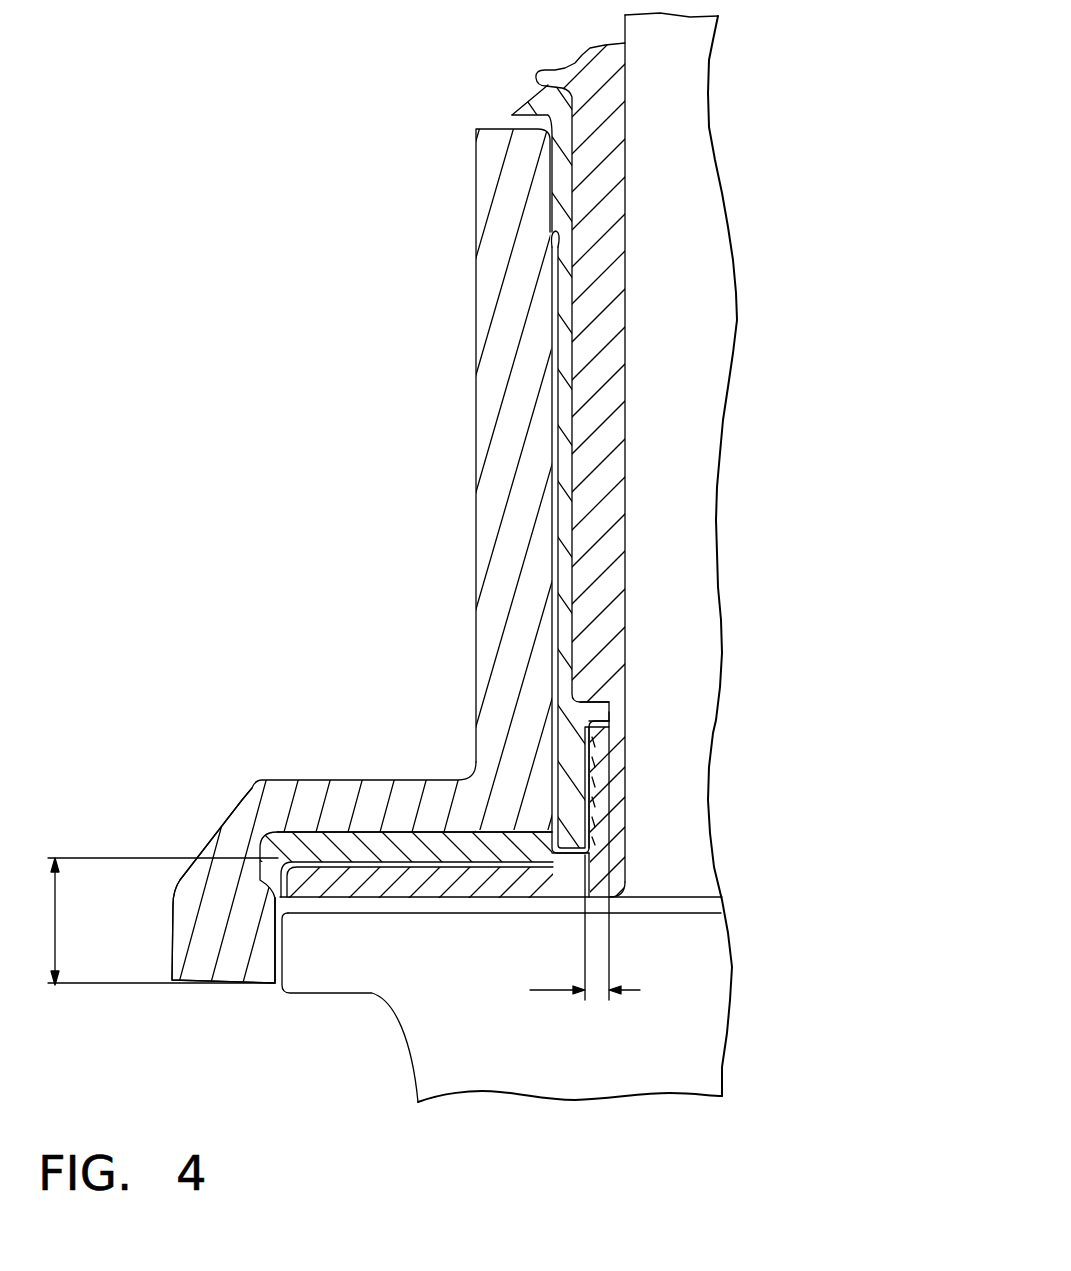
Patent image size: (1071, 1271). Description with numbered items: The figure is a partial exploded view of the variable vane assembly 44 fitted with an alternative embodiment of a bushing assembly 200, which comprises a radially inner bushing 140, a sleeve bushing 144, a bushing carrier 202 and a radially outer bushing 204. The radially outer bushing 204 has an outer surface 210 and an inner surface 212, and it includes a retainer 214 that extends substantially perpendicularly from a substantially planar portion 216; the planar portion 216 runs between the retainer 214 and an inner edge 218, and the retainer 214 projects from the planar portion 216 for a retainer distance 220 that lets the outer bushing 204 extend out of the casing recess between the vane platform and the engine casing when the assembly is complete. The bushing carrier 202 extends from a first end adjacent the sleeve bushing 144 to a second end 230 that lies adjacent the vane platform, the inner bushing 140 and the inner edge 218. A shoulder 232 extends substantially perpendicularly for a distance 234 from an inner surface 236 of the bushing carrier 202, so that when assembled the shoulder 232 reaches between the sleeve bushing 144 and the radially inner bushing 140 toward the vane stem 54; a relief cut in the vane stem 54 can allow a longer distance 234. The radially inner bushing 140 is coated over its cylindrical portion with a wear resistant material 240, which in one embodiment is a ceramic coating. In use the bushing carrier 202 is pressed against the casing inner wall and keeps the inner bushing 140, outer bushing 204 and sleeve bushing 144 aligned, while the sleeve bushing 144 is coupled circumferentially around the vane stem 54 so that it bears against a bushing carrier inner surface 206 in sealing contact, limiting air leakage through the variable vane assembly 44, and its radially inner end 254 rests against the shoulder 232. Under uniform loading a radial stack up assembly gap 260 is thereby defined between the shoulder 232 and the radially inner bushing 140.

The variable vane assembly 44 is at (291, 251).
The vane stem 54 is at (707, 273).
The radially inner bushing 140 is at (418, 887).
The sleeve bushing 144 is at (598, 450).
The bushing assembly 200 is at (771, 969).
The bushing carrier 202 is at (565, 352).
The radially outer bushing 204 is at (297, 843).
The bushing carrier inner surface 206 is at (575, 512).
The outer surface 210 is at (330, 825).
The inner surface 212 is at (440, 868).
The retainer 214 is at (261, 904).
The planar portion 216 is at (433, 838).
The inner edge 218 is at (570, 867).
The retainer distance 220 is at (62, 922).
The second end 230 is at (590, 863).
The shoulder 232 is at (600, 698).
The distance 234 is at (548, 992).
The inner surface 236 is at (592, 783).
The wear resistant material 240 is at (592, 832).
The radially inner end 254 is at (575, 675).
The radial stack up assembly gap 260 is at (621, 721).